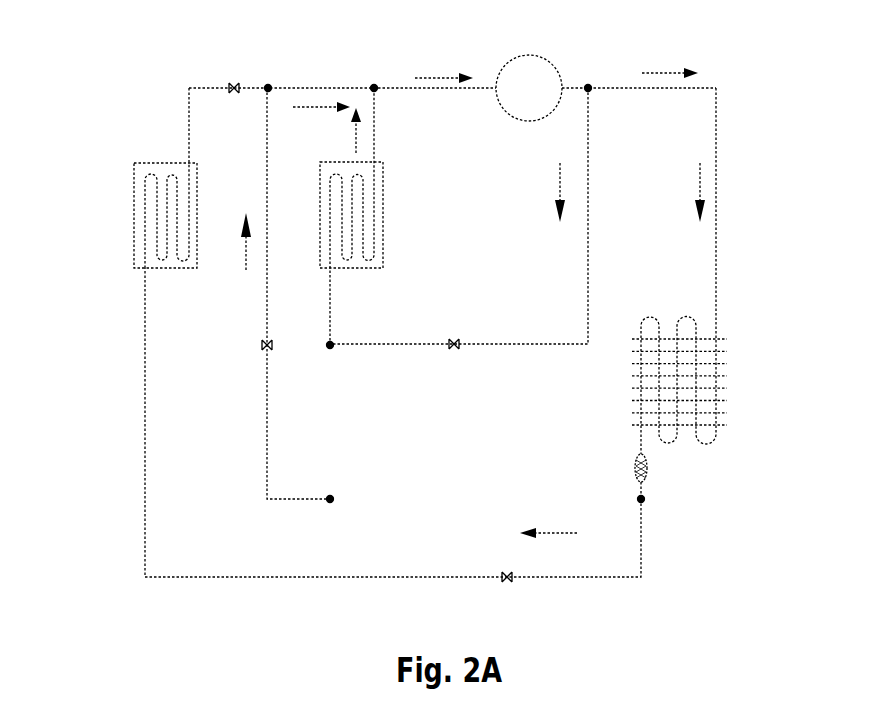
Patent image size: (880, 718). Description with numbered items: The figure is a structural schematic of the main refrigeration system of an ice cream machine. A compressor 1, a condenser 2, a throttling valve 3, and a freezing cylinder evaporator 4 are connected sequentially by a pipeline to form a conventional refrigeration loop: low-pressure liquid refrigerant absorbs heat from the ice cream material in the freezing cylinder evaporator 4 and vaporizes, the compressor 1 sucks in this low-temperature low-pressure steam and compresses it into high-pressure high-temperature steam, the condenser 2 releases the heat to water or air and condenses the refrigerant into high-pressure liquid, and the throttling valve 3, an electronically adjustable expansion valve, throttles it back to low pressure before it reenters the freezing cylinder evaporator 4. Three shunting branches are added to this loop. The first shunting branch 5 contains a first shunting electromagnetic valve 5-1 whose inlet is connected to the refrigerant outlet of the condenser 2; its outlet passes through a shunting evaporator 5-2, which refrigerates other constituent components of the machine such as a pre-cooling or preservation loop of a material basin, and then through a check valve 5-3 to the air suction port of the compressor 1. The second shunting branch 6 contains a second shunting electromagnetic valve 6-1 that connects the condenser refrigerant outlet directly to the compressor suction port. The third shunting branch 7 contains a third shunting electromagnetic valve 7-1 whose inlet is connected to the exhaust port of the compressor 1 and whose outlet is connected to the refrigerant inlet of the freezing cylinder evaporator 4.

The compressor 1 is at (553, 62).
The condenser 2 is at (727, 380).
The throttling valve 3 is at (647, 470).
The freezing cylinder evaporator 4 is at (383, 200).
The first shunting branch 5 is at (642, 528).
The first shunting electromagnetic valve 5-1 is at (510, 585).
The shunting evaporator 5-2 is at (134, 212).
The check valve 5-3 is at (232, 84).
The second shunting branch 6 is at (267, 437).
The second shunting electromagnetic valve 6-1 is at (263, 345).
The third shunting branch 7 is at (588, 212).
The third shunting electromagnetic valve 7-1 is at (458, 350).